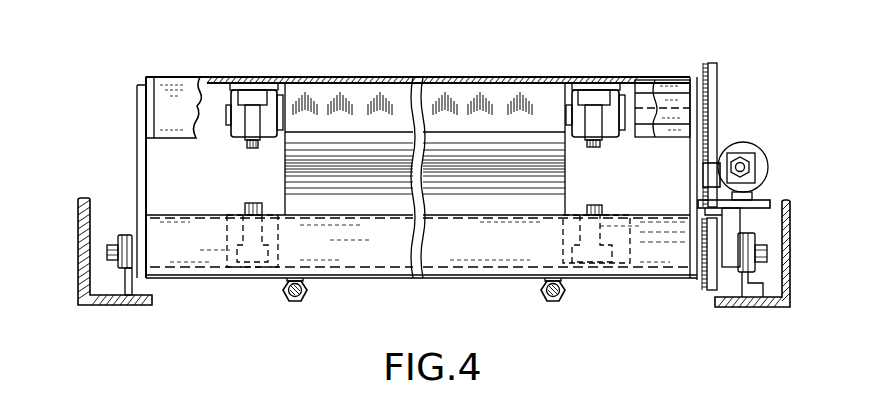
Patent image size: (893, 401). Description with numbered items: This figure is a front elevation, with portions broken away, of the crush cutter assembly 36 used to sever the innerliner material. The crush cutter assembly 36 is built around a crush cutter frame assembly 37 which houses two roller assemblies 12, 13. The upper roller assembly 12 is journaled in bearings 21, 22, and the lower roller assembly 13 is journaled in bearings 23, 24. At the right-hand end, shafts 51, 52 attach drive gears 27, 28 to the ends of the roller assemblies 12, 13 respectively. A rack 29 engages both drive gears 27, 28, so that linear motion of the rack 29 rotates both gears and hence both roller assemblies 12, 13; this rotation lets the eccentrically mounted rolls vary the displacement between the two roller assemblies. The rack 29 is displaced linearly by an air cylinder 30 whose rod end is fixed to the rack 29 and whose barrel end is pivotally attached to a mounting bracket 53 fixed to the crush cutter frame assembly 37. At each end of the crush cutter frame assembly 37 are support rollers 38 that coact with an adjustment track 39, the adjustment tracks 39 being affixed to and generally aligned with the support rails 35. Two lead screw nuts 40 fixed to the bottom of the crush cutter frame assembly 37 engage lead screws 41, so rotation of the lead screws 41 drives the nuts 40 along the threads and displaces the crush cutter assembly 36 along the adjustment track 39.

The roller assembly 12 is at (485, 114).
The roller assembly 13 is at (475, 205).
The bearing 21 is at (252, 118).
The bearing 22 is at (600, 120).
The bearing 23 is at (240, 230).
The bearing 24 is at (603, 232).
The drive gear 27 is at (718, 64).
The drive gear 28 is at (703, 287).
The rack 29 is at (703, 177).
The air cylinder 30 is at (738, 143).
The support rail 35 is at (82, 297).
The crush cutter assembly 36 is at (355, 66).
The crush cutter frame assembly 37 is at (221, 77).
The support roller 38 is at (126, 236).
The adjustment track 39 is at (124, 296).
The lead screw nut 40 is at (285, 299).
The lead screw 41 is at (298, 297).
The shaft 51 is at (628, 108).
The shaft 52 is at (643, 248).
The mounting bracket 53 is at (765, 202).